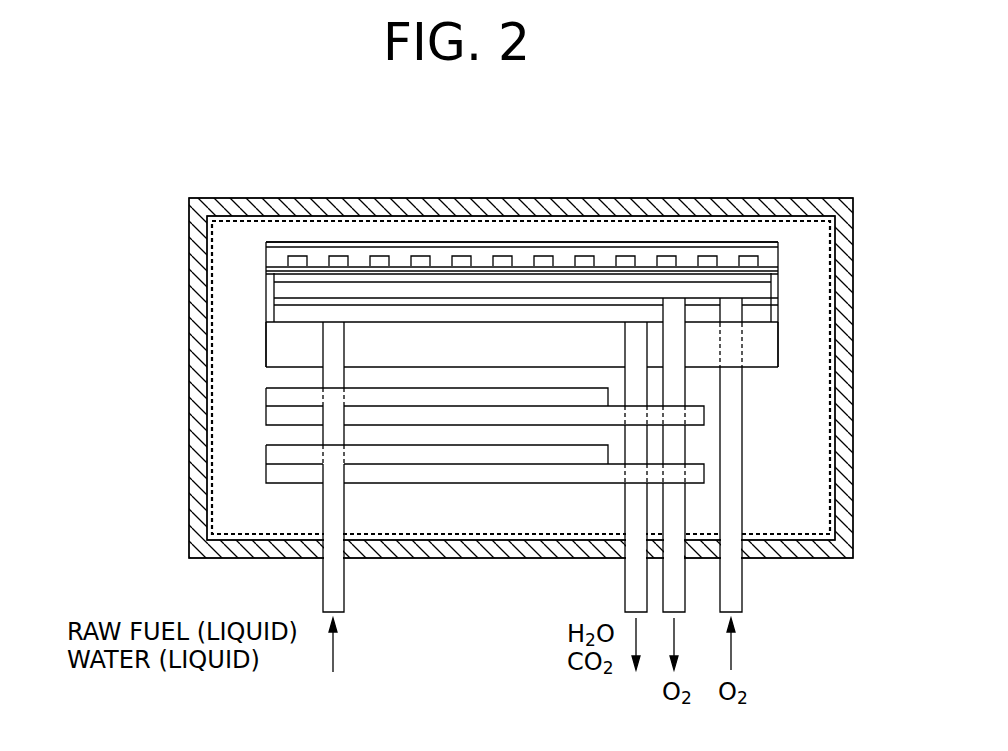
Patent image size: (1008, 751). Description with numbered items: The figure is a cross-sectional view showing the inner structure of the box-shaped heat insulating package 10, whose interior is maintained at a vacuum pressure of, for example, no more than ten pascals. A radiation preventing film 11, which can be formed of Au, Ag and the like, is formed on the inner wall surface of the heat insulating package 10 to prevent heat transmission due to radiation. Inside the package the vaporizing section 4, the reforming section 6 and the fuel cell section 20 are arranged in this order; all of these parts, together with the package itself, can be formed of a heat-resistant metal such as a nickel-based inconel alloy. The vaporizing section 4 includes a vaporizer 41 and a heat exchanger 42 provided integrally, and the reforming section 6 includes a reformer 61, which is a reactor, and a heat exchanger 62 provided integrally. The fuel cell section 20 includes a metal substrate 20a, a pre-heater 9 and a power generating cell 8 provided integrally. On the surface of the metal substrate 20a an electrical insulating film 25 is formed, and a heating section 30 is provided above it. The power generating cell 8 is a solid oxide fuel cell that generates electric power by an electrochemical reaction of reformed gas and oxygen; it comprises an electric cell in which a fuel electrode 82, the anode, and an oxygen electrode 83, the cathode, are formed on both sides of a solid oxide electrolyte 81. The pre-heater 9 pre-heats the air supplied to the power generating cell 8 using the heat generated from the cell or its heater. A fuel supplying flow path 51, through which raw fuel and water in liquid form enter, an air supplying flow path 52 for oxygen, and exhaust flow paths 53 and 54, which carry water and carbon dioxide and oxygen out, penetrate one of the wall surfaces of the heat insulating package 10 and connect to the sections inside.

The heat insulating package 10 is at (547, 197).
The radiation preventing film 11 is at (309, 228).
The fuel cell section 20 is at (406, 243).
The metal substrate 20a is at (265, 270).
The electrical insulating film 25 is at (278, 260).
The heating section 30 is at (742, 240).
The power generating cell 8 is at (429, 257).
The solid oxide electrolyte 81 is at (265, 298).
The fuel electrode 82 is at (265, 312).
The oxygen electrode 83 is at (265, 280).
The pre-heater 9 is at (265, 347).
The reforming section 6 is at (392, 383).
The reformer 61 is at (265, 395).
The heat exchanger 62 is at (265, 415).
The vaporizing section 4 is at (392, 472).
The vaporizer 41 is at (265, 455).
The heat exchanger 42 is at (265, 473).
The fuel supplying flow path 51 is at (330, 590).
The air supplying flow path 52 is at (733, 575).
The exhaust flow path 53 is at (625, 590).
The exhaust flow path 54 is at (675, 595).